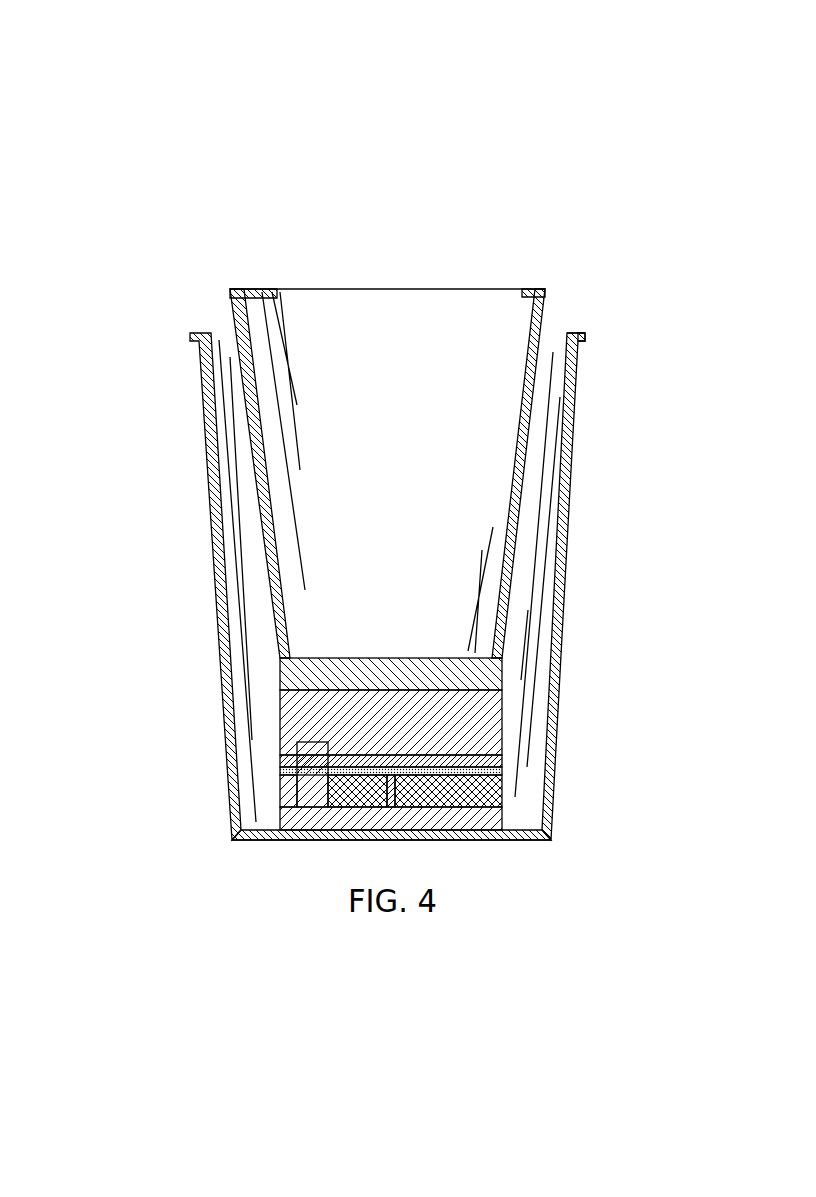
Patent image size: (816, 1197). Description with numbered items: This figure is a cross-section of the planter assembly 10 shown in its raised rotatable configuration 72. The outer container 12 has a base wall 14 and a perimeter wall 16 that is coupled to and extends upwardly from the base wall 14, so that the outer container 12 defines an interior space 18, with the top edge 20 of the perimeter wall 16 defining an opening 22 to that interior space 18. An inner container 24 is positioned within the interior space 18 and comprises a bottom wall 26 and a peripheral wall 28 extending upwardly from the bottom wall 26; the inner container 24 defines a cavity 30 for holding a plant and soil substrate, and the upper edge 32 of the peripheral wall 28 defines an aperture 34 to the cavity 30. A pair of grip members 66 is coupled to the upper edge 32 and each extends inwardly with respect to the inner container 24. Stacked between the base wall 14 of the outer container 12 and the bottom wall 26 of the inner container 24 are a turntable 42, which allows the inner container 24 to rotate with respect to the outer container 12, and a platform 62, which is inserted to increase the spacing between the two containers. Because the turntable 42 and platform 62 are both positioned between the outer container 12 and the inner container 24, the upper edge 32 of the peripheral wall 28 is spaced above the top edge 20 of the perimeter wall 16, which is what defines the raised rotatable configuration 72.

The planter assembly 10 is at (507, 138).
The outer container 12 is at (583, 728).
The base wall 14 is at (513, 840).
The perimeter wall 16 is at (562, 603).
The interior space 18 is at (540, 467).
The top edge 20 is at (583, 335).
The opening 22 is at (558, 332).
The inner container 24 is at (272, 238).
The bottom wall 26 is at (337, 677).
The peripheral wall 28 is at (257, 507).
The cavity 30 is at (352, 408).
The upper edge 32 is at (547, 288).
The aperture 34 is at (362, 290).
The turntable 42 is at (280, 793).
The platform 62 is at (280, 725).
The grip members 66 is at (277, 291).
The raised rotatable configuration 72 is at (248, 858).